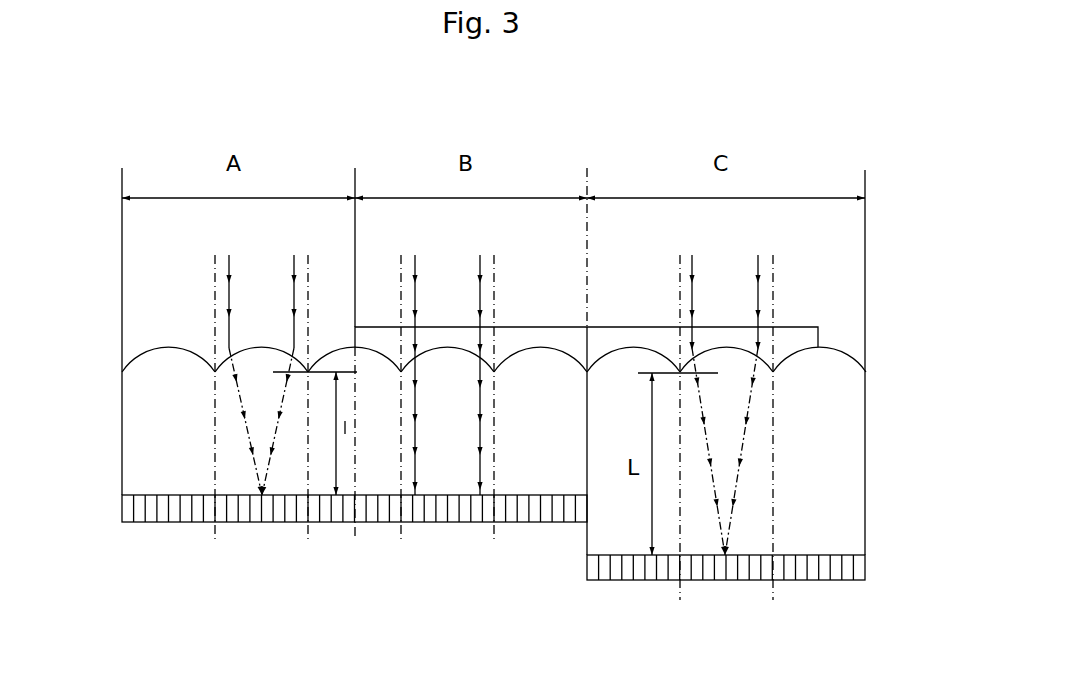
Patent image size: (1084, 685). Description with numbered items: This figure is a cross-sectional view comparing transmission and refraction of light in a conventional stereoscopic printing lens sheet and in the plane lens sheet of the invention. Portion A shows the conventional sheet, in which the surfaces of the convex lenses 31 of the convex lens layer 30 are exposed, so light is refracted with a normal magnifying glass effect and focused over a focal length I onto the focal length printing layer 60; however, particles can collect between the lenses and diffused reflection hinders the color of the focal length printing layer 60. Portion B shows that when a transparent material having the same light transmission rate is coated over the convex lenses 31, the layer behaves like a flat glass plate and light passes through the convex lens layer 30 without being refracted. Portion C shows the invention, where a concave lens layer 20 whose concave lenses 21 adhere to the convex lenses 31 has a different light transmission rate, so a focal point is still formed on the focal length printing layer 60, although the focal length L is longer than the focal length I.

The concave lens layer 20 is at (524, 342).
The concave lenses 21 is at (540, 348).
The convex lens layer 30 is at (138, 431).
The convex lenses 31 is at (168, 347).
The focal length printing layer 60 is at (188, 515).